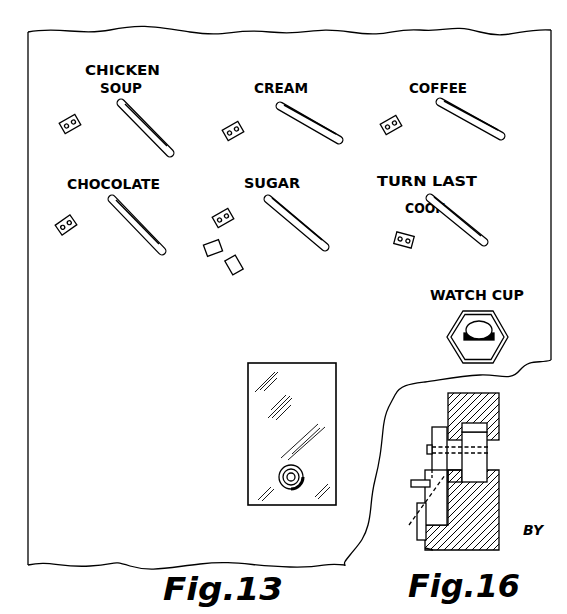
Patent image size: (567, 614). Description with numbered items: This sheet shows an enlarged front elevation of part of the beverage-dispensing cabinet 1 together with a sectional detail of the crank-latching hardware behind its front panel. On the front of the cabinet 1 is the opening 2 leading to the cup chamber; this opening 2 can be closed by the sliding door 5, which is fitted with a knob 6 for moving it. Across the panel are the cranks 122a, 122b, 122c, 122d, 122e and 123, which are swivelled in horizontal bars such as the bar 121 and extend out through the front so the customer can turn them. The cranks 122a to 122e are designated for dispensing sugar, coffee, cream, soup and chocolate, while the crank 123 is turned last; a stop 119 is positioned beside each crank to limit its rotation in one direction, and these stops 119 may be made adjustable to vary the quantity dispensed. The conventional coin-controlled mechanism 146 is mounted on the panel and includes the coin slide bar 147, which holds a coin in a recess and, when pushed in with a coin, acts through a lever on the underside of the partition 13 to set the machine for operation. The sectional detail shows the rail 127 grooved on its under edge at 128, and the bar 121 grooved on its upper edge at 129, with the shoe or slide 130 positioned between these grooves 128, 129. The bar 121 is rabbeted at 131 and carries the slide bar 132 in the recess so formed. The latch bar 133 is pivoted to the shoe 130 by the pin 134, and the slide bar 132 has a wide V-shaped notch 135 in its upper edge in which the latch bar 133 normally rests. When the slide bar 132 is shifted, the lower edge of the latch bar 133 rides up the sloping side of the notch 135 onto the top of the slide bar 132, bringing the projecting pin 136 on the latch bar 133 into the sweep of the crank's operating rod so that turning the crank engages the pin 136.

In FIG. 13, the cabinet 1 is at (40, 163).
In FIG. 13, the partition 13 is at (560, 112).
In FIG. 13, the opening 2 is at (336, 424).
In FIG. 13, the sliding door 5 is at (318, 402).
In FIG. 13, the knob 6 is at (303, 477).
In FIG. 13, the stop 119 is at (400, 136).
In FIG. 13, the crank 122a is at (309, 238).
In FIG. 13, the crank 122b is at (482, 130).
In FIG. 13, the crank 122c is at (309, 128).
In FIG. 13, the crank 122d is at (141, 129).
In FIG. 13, the crank 122e is at (135, 240).
In FIG. 13, the crank 123 is at (466, 229).
In FIG. 13, the coin-controlled mechanism 146 is at (462, 343).
In FIG. 13, the slide bar 147 is at (486, 323).
In FIG. 16, the horizontal bar 121 is at (499, 520).
In FIG. 16, the rail 127 is at (495, 410).
In FIG. 16, the groove 128 is at (488, 430).
In FIG. 16, the groove 129 is at (493, 486).
In FIG. 16, the shoe or slide 130 is at (482, 462).
In FIG. 16, the rabbet 131 is at (425, 548).
In FIG. 16, the slide bar 132 is at (430, 497).
In FIG. 16, the latch bar 133 is at (436, 434).
In FIG. 16, the pin 134 is at (427, 450).
In FIG. 16, the V-shaped notch 135 is at (412, 508).
In FIG. 16, the projecting pin 136 is at (411, 484).